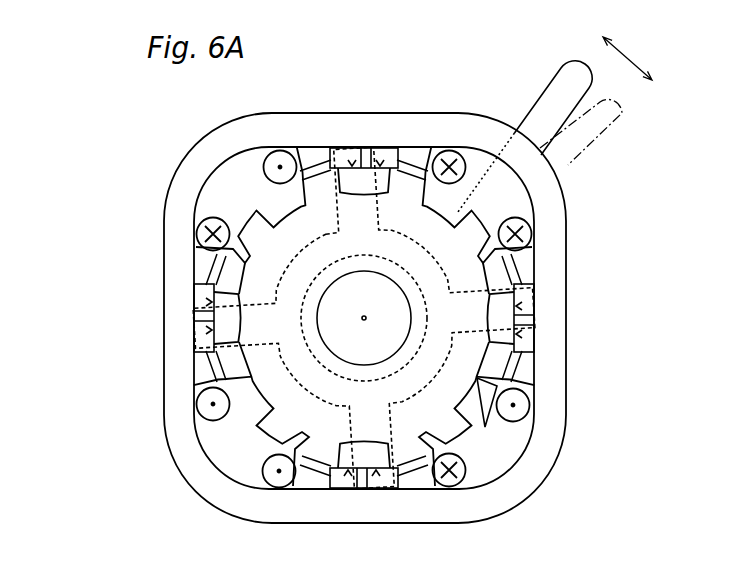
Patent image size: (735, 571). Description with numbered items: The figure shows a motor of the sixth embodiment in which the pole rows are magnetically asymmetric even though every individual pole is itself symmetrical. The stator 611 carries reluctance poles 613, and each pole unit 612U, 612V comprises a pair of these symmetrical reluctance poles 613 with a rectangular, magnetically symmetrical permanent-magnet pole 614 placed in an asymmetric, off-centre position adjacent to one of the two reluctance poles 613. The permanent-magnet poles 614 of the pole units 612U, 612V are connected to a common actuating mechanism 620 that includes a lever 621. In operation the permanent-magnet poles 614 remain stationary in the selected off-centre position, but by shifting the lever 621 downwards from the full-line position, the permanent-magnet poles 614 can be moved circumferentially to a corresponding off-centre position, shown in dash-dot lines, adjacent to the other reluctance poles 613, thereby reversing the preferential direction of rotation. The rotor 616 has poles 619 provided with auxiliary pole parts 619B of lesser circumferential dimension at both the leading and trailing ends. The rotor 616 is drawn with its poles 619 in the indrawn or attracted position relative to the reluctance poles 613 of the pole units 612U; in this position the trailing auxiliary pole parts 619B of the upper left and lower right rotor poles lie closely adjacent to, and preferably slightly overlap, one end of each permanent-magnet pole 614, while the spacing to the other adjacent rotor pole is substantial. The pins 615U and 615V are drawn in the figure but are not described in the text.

The stator 611 is at (190, 184).
The pole unit 612U is at (381, 133).
The pole unit 612V is at (175, 332).
The reluctance pole 613 is at (317, 153).
The permanent-magnet pole 614 is at (343, 148).
The U-phase pin 615U is at (265, 168).
The V-phase pin 615V is at (195, 237).
The rotor 616 is at (490, 278).
The rotor pole 619 is at (495, 413).
The auxiliary pole part 619B is at (485, 427).
The actuating mechanism 620 is at (544, 84).
The lever 621 is at (580, 74).